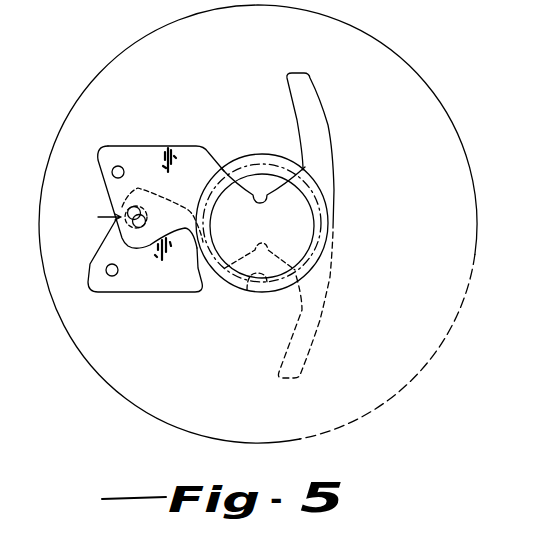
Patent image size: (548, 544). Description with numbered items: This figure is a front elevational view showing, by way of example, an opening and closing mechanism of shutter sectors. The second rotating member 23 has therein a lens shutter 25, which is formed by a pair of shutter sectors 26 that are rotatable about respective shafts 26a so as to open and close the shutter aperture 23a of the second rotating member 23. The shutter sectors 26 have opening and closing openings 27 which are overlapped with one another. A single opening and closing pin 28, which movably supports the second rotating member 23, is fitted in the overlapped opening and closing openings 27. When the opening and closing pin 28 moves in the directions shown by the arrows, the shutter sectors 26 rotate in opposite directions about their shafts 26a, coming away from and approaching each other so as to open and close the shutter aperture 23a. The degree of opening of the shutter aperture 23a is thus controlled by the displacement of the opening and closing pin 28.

The second rotating member 23 is at (122, 374).
The shutter aperture 23a is at (251, 283).
The lens shutter 25 is at (83, 130).
The shutter sectors 26 is at (190, 157).
The shafts 26a is at (118, 166).
The opening and closing openings 27 is at (128, 210).
The opening and closing pin 28 is at (130, 223).